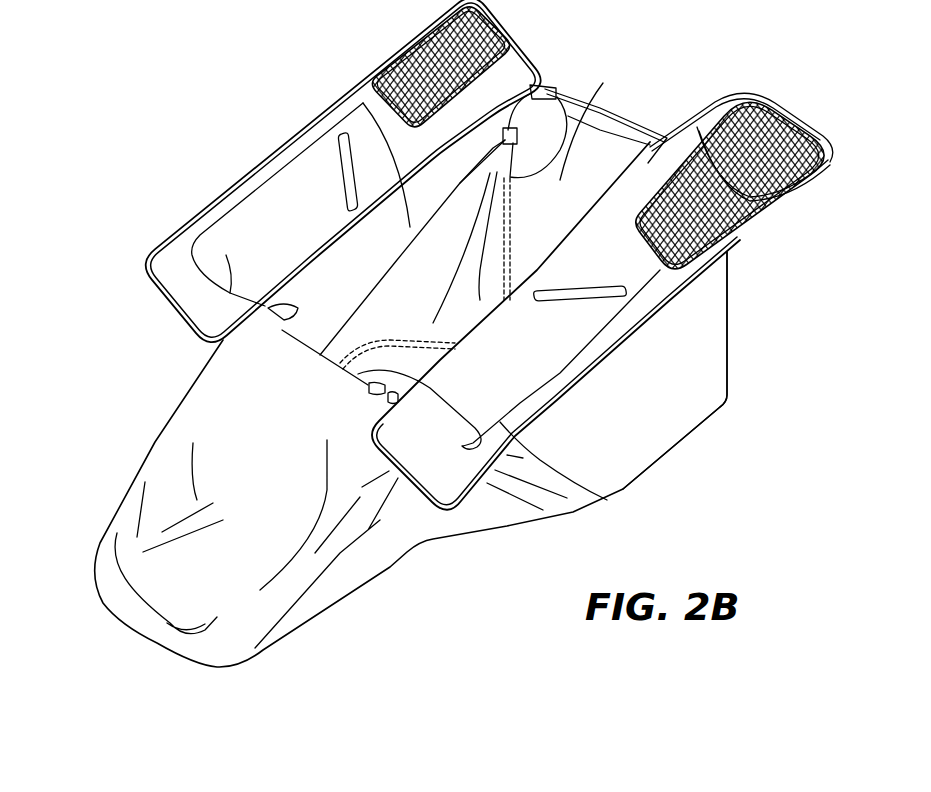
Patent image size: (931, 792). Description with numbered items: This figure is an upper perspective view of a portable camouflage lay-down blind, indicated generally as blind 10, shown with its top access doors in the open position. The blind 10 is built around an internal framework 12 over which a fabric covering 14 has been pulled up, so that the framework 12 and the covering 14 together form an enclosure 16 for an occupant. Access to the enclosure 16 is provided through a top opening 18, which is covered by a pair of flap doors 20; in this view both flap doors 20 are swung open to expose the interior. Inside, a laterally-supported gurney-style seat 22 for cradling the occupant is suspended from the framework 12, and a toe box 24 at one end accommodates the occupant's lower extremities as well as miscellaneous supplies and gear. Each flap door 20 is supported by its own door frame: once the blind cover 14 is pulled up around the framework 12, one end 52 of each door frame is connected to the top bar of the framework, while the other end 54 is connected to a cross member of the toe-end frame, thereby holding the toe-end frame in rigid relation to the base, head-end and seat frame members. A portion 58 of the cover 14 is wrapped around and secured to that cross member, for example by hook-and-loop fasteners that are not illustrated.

The portable lay-down blind 10 is at (118, 292).
The internal framework 12 is at (558, 92).
The fabric covering 14 is at (717, 317).
The enclosure 16 is at (645, 100).
The top opening 18 is at (363, 103).
The flap doors 20 is at (280, 150).
The gurney-style seat 22 is at (625, 146).
The toe box 24 is at (157, 483).
The end of door frame 52 is at (527, 70).
The other end of door frame 54 is at (228, 262).
The portion of the cover 58 is at (600, 497).